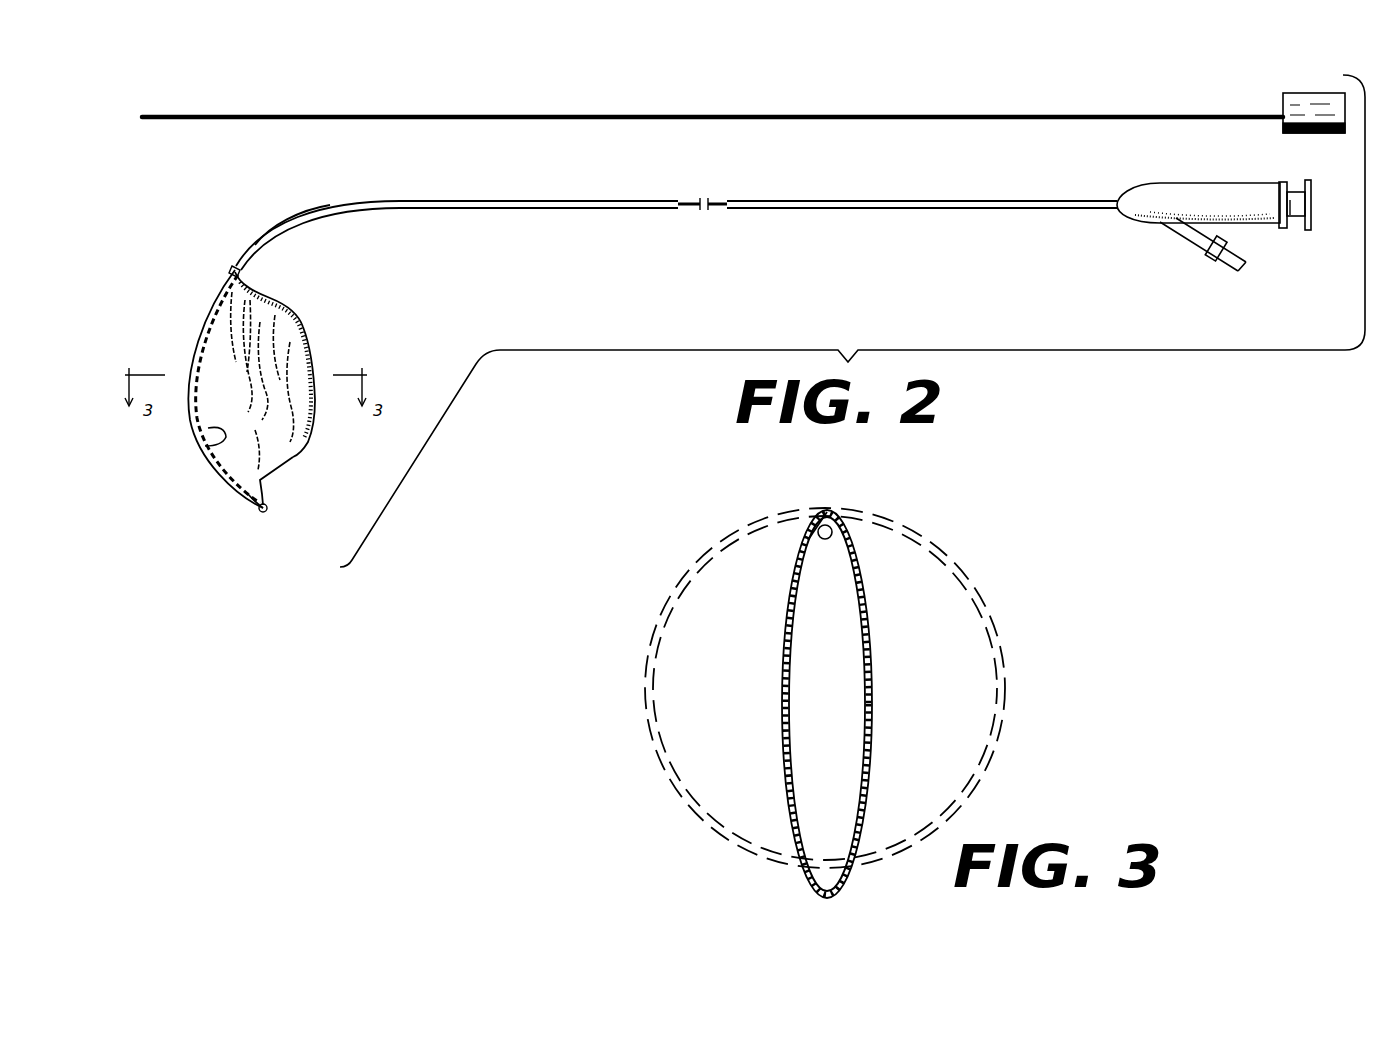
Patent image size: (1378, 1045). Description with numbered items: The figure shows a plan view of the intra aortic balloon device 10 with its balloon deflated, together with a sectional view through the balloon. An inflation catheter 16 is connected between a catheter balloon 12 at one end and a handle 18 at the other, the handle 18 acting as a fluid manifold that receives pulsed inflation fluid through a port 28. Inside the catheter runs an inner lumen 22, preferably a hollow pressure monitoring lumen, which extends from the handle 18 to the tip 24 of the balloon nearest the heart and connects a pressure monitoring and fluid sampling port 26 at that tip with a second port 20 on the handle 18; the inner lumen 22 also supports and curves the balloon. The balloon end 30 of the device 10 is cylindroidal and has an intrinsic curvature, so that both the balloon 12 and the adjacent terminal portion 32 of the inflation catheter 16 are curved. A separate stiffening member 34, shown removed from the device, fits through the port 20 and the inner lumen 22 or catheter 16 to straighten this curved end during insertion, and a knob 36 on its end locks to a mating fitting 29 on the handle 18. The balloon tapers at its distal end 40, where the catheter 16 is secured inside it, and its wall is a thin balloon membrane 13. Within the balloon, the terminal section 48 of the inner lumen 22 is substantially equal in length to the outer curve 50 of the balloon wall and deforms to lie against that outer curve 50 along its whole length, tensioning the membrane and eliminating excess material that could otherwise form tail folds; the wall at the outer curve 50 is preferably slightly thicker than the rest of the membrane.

In FIG. 2, the IAB device 10 is at (262, 185).
In FIG. 2, the catheter balloon 12 is at (309, 453).
In FIG. 2, the balloon membrane 13 is at (311, 320).
In FIG. 3, the balloon membrane 13 is at (872, 715).
In FIG. 2, the inflation catheter 16 is at (880, 200).
In FIG. 2, the handle 18 is at (1160, 185).
In FIG. 2, the second port 20 is at (1311, 204).
In FIG. 2, the inner lumen 22 is at (700, 200).
In FIG. 3, the inner lumen 22 is at (824, 510).
In FIG. 2, the tip 24 is at (252, 521).
In FIG. 2, the pressure monitoring and fluid sampling port 26 is at (270, 510).
In FIG. 2, the port 28 is at (1230, 265).
In FIG. 2, the mating fitting 29 is at (1295, 225).
In FIG. 2, the balloon end 30 is at (368, 190).
In FIG. 2, the terminal portion 32 is at (317, 223).
In FIG. 2, the stiffening member 34 is at (672, 115).
In FIG. 2, the knob 36 is at (1293, 100).
In FIG. 2, the distal end 40 is at (233, 256).
In FIG. 2, the terminal section 48 is at (205, 447).
In FIG. 3, the terminal section 48 is at (818, 545).
In FIG. 2, the outer curve 50 is at (200, 305).